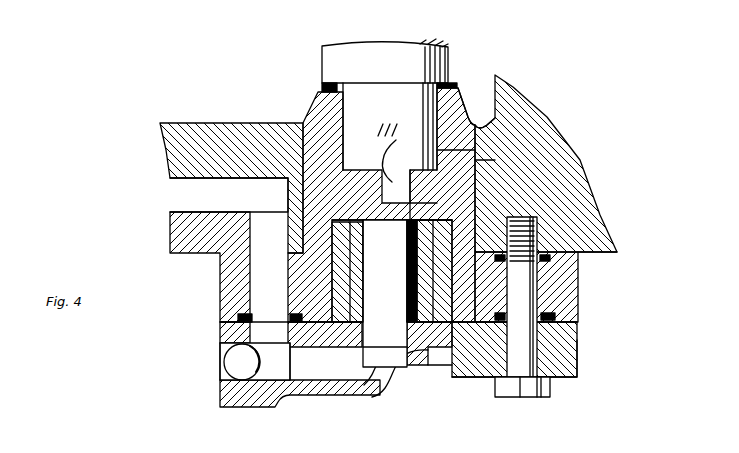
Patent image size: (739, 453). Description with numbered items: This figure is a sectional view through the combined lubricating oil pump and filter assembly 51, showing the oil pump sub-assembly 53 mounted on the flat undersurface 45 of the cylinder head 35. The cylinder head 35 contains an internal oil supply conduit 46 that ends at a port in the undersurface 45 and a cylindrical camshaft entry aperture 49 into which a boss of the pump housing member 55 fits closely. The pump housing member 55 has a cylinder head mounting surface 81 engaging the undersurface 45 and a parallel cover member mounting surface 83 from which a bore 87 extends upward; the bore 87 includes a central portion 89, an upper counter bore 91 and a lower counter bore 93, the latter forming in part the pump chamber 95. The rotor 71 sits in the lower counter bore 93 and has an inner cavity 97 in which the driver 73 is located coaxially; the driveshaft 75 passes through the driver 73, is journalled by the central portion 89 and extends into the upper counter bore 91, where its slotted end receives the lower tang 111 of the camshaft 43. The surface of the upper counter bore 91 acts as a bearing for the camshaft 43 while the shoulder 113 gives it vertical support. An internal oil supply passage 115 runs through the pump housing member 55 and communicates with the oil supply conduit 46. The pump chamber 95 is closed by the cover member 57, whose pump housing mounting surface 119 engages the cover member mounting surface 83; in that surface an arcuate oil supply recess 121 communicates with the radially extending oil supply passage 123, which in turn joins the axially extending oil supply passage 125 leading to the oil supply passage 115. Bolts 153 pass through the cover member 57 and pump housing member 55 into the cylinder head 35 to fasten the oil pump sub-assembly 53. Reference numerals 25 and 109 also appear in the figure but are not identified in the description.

The camshaft 43 is at (374, 53).
The upper counter bore 91 is at (350, 105).
The notch 25 is at (460, 123).
The cylinder head 35 is at (525, 115).
The lower tang 111 is at (384, 153).
The shoulder 113 is at (437, 157).
The camshaft entry aperture 49 is at (462, 160).
The shoulder 109 is at (413, 203).
The inner cavity 97 is at (432, 242).
The cylinder head mounting surface 81 is at (577, 240).
The flat undersurface 45 is at (603, 257).
The pump housing member 55 is at (575, 270).
The bolts 153 is at (577, 287).
The pump housing mounting surface 119 is at (580, 325).
The cover member 57 is at (565, 340).
The cover member mounting surface 83 is at (490, 370).
The arcuate oil supply recess 121 is at (457, 365).
The driver 73 is at (438, 360).
The driveshaft 75 is at (414, 367).
The pump chamber 95 is at (377, 305).
The rotor 71 is at (308, 350).
The radially extending oil supply passage 123 is at (300, 382).
The combined lubricating oil pump and filter assembly 51 is at (190, 410).
The oil pump sub-assembly 53 is at (197, 318).
The axially extending oil supply passage 125 is at (262, 331).
The internal oil supply passage 115 is at (260, 278).
The internal oil supply conduit 46 is at (187, 189).
The bore 87 is at (400, 213).
The central portion 89 is at (385, 222).
The lower counter bore 93 is at (332, 265).